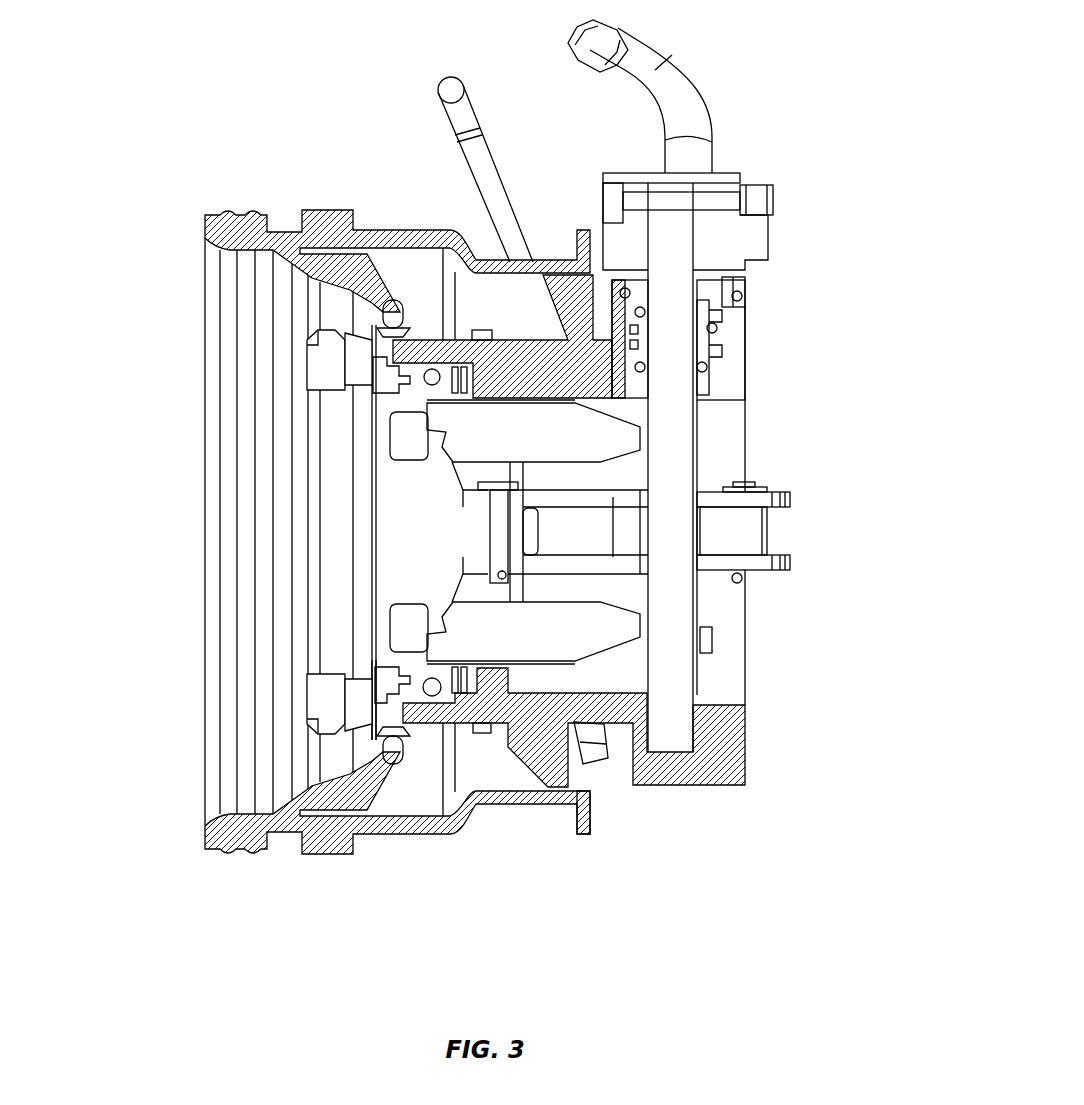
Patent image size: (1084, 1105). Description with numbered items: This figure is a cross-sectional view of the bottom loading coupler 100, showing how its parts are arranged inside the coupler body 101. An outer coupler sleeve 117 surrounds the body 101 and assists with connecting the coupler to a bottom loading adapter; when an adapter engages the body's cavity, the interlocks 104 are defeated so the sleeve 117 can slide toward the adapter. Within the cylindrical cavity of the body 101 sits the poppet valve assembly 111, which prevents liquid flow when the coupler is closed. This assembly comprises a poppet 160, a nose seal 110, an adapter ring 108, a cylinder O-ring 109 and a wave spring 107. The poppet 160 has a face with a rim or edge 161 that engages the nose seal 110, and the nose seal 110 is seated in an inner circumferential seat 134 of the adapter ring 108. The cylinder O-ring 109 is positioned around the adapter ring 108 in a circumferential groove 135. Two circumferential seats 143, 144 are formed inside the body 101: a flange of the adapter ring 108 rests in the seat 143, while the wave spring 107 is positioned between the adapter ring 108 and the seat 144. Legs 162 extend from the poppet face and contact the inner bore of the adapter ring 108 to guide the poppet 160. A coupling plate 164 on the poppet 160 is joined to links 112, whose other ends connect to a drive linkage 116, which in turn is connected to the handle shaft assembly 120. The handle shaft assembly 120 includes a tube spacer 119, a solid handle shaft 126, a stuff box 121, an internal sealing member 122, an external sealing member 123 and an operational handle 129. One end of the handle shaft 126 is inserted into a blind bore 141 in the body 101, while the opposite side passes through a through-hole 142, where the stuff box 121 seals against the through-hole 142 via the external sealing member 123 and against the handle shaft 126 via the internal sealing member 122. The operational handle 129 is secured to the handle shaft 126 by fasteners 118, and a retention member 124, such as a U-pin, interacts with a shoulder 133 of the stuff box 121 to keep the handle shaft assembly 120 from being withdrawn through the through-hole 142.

The bottom loading coupler 100 is at (92, 88).
The coupler body 101 is at (230, 853).
The interlocks 104 is at (303, 697).
The wave spring 107 is at (469, 355).
The adapter ring 108 is at (376, 327).
The cylinder O-ring 109 is at (433, 699).
The nose seal 110 is at (373, 702).
The poppet valve assembly 111 is at (581, 691).
The links 112 is at (796, 566).
The drive linkage 116 is at (769, 518).
The outer coupler sleeve 117 is at (586, 838).
The fasteners 118 is at (779, 193).
The tube spacer 119 is at (700, 611).
The handle shaft assembly 120 is at (779, 237).
The stuff box 121 is at (723, 380).
The internal sealing member 122 is at (709, 362).
The external sealing member 123 is at (714, 340).
The retention member 124 is at (751, 294).
The handle shaft 126 is at (704, 457).
The operational handle 129 is at (645, 60).
The shoulder 133 is at (714, 288).
The inner circumferential seat 134 is at (396, 347).
The circumferential groove 135 is at (431, 349).
The blind bore 141 is at (526, 538).
The through-hole 142 is at (629, 288).
The circumferential seat 143 is at (394, 768).
The circumferential seat 144 is at (483, 693).
The poppet 160 is at (401, 537).
The rim or edge 161 is at (356, 390).
The legs 162 is at (613, 636).
The coupling plate 164 is at (701, 717).